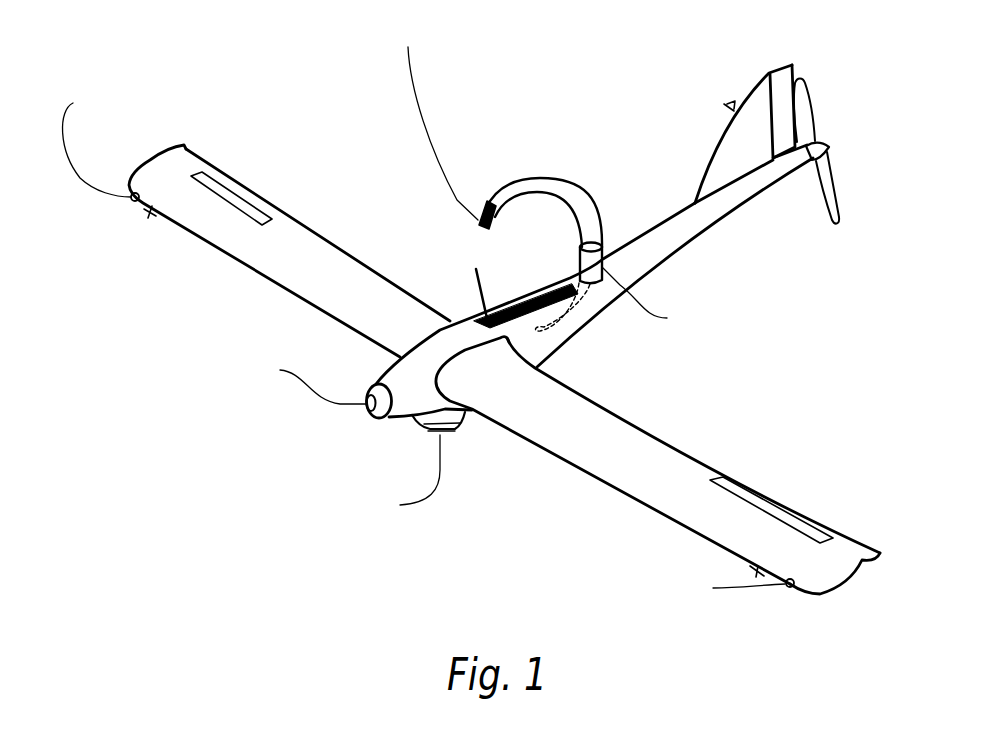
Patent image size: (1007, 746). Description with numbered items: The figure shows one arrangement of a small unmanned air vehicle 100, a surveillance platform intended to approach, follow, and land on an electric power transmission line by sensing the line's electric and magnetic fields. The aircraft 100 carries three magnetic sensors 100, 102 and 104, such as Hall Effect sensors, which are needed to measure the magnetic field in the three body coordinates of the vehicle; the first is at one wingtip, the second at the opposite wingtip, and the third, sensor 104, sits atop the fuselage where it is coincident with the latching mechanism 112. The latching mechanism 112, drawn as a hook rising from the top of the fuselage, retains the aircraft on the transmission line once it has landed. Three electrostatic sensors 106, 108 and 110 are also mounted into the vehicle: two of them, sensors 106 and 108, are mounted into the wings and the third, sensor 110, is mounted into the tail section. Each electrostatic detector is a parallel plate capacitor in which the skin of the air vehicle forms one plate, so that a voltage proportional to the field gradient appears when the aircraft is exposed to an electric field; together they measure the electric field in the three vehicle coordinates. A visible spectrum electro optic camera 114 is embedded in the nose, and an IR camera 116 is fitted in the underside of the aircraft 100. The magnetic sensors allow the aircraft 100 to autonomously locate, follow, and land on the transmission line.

The small unmanned air vehicle 100 is at (133, 202).
The magnetic sensor 102 is at (790, 590).
The magnetic sensor 104 is at (595, 213).
The electrostatic sensor 106 is at (149, 216).
The electrostatic sensor 108 is at (755, 571).
The electrostatic sensor 110 is at (731, 108).
The latching mechanism 112 is at (506, 168).
The visible spectrum electro optic camera 114 is at (371, 413).
The IR camera 116 is at (448, 435).